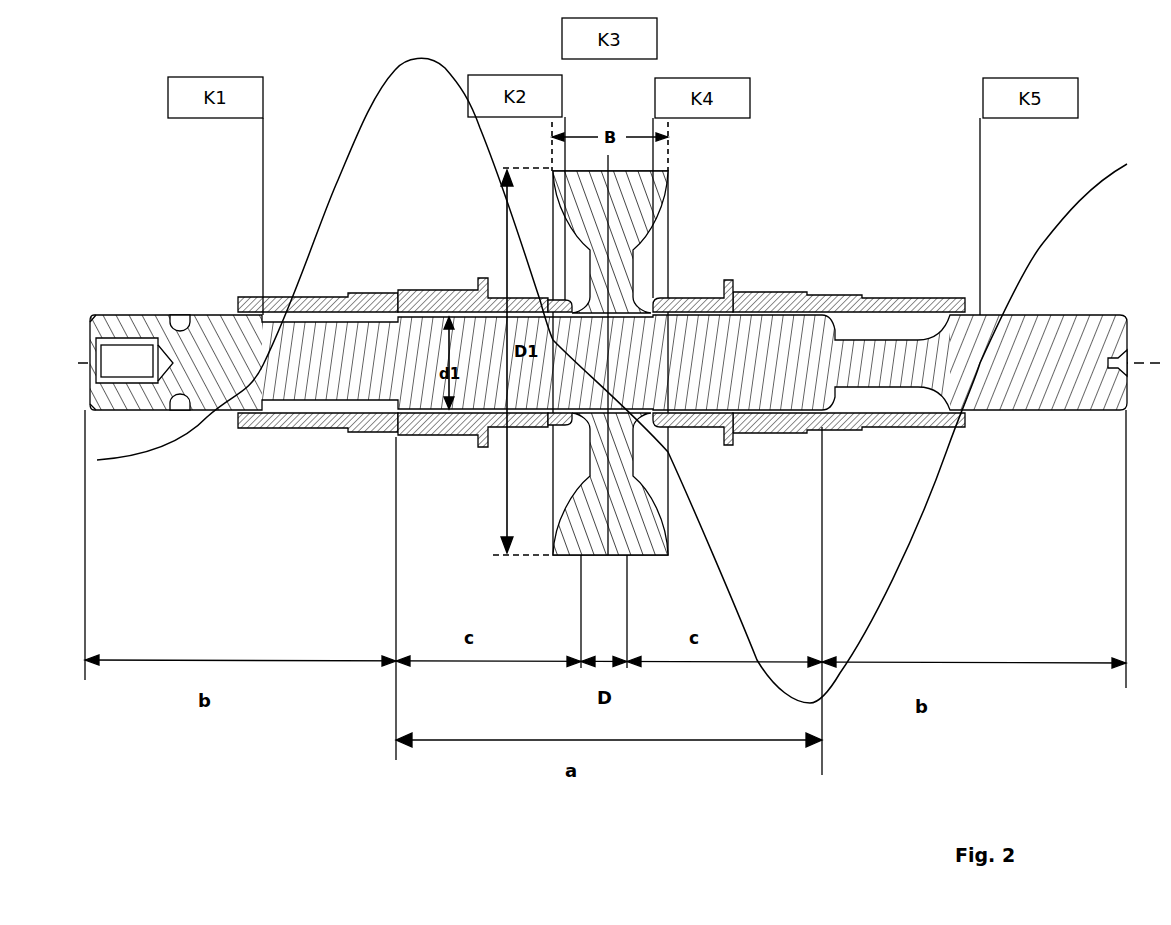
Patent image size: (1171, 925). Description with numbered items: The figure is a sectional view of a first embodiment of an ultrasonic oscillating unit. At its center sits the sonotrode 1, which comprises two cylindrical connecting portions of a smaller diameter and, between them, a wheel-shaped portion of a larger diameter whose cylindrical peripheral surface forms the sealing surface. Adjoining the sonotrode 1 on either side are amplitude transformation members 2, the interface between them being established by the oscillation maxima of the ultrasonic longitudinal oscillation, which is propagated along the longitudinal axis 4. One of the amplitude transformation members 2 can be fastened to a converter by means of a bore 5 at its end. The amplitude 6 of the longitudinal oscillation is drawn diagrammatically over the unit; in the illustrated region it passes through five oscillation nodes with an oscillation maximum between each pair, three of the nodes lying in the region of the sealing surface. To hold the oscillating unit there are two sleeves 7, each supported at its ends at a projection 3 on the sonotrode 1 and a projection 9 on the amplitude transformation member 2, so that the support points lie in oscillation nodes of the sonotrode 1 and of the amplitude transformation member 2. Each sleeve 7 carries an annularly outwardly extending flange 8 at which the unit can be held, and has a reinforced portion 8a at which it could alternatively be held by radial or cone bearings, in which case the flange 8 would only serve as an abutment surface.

The sonotrode 1 is at (670, 181).
The amplitude transformation member 2 is at (1082, 300).
The projection 3 is at (556, 426).
The longitudinal axis 4 is at (82, 367).
The bore 5 is at (97, 354).
The amplitude 6 is at (355, 131).
The sleeve 7 is at (333, 421).
The flange 8 is at (480, 449).
The reinforced portion 8a is at (440, 438).
The projection 9 is at (227, 418).